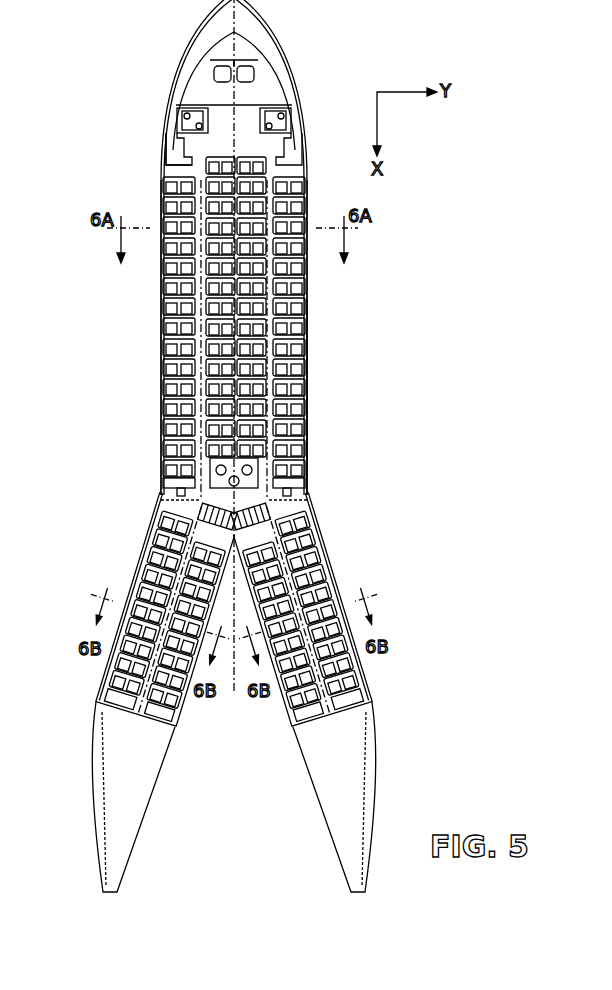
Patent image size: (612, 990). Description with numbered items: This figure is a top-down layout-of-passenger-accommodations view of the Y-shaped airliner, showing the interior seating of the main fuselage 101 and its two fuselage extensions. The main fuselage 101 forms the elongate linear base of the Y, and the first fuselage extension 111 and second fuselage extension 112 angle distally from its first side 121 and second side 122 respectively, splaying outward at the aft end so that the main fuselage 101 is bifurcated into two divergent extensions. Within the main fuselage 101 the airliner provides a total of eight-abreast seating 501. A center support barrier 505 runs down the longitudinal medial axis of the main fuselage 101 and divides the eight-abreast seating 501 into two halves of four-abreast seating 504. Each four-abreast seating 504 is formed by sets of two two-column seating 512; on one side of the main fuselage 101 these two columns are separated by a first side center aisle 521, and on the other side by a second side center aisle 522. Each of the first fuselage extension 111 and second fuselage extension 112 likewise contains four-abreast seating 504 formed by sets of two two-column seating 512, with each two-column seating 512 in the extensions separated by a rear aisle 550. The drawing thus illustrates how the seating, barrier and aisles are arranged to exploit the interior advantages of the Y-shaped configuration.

The main fuselage 101 is at (304, 172).
The first fuselage extension 111 is at (145, 562).
The second fuselage extension 112 is at (333, 580).
The first side 121 is at (161, 300).
The second side 122 is at (307, 300).
The eight-abreast seating 501 is at (161, 171).
The four-abreast seating 504 is at (163, 352).
The center support barrier 505 is at (165, 370).
The two-column seating 512 is at (307, 420).
The first side center aisle 521 is at (212, 220).
The second side center aisle 522 is at (306, 210).
The rear aisle 550 is at (290, 703).